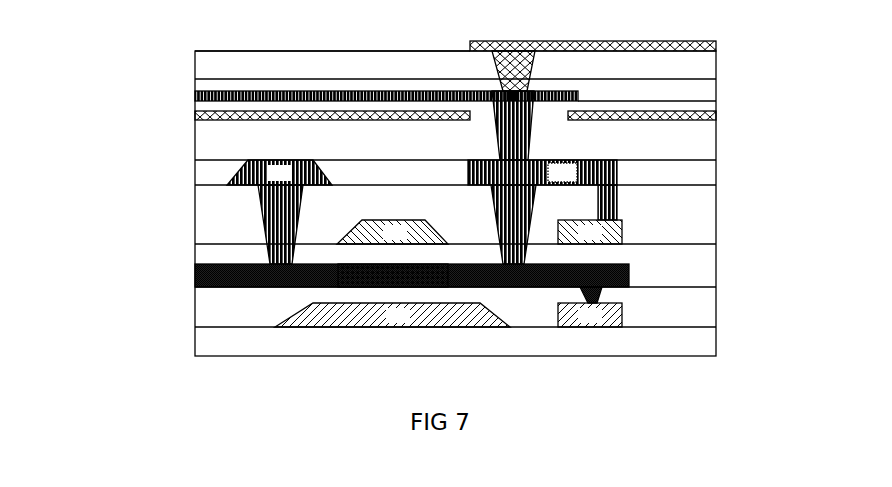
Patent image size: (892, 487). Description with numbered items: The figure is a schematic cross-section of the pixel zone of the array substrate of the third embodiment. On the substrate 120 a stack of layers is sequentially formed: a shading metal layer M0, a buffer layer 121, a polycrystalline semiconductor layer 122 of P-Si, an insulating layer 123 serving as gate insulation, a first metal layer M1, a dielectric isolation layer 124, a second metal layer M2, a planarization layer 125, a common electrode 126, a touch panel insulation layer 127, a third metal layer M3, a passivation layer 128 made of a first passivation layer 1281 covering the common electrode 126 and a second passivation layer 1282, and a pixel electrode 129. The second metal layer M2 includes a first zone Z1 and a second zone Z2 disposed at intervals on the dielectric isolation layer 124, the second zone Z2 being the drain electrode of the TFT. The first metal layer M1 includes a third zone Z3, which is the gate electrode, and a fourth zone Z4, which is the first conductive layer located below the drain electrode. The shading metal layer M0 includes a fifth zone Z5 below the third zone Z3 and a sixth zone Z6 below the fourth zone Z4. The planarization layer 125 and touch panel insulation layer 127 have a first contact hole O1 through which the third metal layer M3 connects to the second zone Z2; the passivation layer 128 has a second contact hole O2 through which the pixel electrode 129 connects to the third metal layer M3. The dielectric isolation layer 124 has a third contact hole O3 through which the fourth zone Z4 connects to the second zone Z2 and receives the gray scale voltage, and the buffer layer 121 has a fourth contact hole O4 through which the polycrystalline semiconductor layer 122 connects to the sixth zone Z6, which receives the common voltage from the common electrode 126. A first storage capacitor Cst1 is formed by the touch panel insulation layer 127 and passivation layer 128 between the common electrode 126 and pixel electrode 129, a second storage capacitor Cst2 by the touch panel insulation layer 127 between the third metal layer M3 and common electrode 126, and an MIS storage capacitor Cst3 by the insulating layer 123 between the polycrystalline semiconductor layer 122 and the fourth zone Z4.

The substrate 120 is at (455, 203).
The buffer layer 121 is at (455, 314).
The polycrystalline semiconductor layer 122 is at (195, 277).
The insulating layer 123 is at (705, 277).
The dielectric isolation layer 124 is at (208, 220).
The planarization layer 125 is at (207, 160).
The common electrode 126 is at (193, 116).
The touch panel insulation layer 127 is at (700, 101).
The passivation layer 128 is at (84, 40).
The first passivation layer 1281 is at (213, 83).
The second passivation layer 1282 is at (220, 65).
The pixel electrode 129 is at (716, 46).
The shading metal layer M0 is at (448, 315).
The first metal layer M1 is at (479, 232).
The second metal layer M2 is at (422, 212).
The third metal layer M3 is at (195, 96).
The polycrystalline silicon P-Si is at (393, 275).
The first storage capacitor Cst1 is at (786, 45).
The second storage capacitor Cst2 is at (127, 97).
The MIS storage capacitor Cst3 is at (789, 225).
The first contact hole O1 is at (488, 118).
The second contact hole O2 is at (538, 60).
The third contact hole O3 is at (621, 167).
The fourth contact hole O4 is at (576, 292).
The first zone Z1 is at (286, 157).
The second zone Z2 is at (546, 152).
The third zone Z3 is at (400, 215).
The fourth zone Z4 is at (624, 215).
The fifth zone Z5 is at (283, 315).
The sixth zone Z6 is at (634, 308).